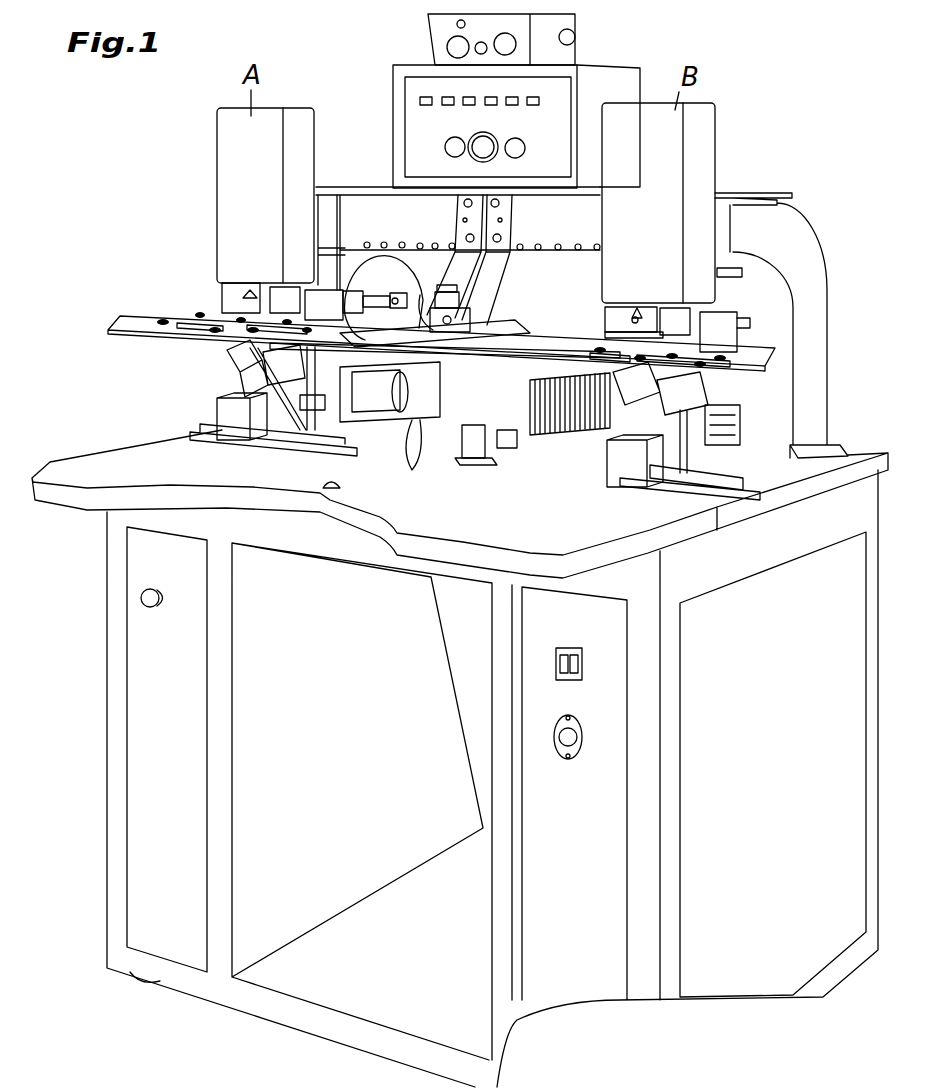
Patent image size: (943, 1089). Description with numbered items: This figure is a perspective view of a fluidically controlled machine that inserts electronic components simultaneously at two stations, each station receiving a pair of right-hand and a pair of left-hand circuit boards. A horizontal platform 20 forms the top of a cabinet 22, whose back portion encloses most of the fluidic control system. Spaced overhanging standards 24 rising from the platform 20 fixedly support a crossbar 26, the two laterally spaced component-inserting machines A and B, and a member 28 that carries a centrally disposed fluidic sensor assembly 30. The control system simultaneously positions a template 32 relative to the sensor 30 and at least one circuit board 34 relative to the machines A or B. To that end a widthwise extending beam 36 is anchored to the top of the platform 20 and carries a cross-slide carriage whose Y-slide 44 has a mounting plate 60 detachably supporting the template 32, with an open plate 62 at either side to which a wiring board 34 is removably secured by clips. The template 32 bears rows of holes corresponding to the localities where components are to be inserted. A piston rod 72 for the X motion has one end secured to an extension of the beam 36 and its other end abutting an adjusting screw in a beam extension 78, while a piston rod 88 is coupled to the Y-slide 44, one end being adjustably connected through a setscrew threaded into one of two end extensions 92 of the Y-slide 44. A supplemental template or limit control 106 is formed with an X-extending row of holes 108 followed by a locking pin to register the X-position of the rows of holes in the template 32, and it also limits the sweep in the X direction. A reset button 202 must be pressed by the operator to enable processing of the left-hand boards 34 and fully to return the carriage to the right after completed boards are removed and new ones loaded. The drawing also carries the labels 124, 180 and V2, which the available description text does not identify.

The horizontal platform 20 is at (80, 464).
The cabinet 22 is at (792, 802).
The overhanging standards 24 is at (823, 283).
The crossbar 26 is at (358, 198).
The supporting member 28 is at (497, 275).
The fluidic sensor assembly 30 is at (497, 312).
The template 32 is at (480, 332).
The circuit board 34 is at (212, 317).
The widthwise extending beam 36 is at (497, 450).
The Y-slide 44 is at (413, 412).
The mounting plate 60 is at (390, 392).
The open plate 62 is at (135, 325).
The piston rod 72 is at (740, 420).
The beam extension 78 is at (743, 447).
The piston rod 88 is at (400, 428).
The end extensions 92 is at (320, 430).
The supplemental template 106 is at (517, 440).
The holes 108 is at (515, 423).
The hose 124 is at (386, 298).
The control box 180 is at (452, 47).
The reset button 202 is at (337, 488).
The valve V2 is at (413, 480).